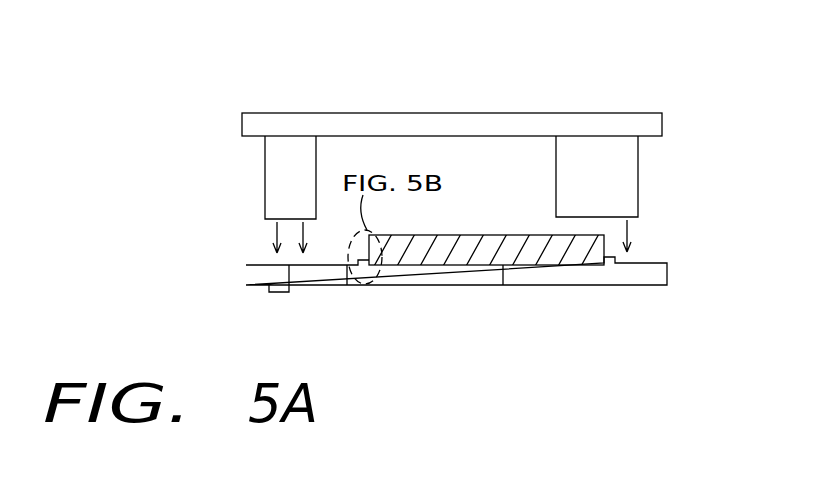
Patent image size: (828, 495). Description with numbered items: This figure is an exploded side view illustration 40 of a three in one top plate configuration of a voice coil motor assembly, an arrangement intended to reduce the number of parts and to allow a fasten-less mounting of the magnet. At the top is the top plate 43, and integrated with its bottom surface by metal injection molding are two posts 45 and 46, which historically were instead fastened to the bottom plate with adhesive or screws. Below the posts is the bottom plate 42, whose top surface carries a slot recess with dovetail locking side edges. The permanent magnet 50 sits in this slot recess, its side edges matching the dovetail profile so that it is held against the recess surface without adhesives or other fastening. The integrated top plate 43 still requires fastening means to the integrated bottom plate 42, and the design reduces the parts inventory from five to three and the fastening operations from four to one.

The exploded side view illustration 40 is at (238, 75).
The top plate 43 is at (480, 121).
The post 45 is at (278, 175).
The post 46 is at (632, 178).
The permanent magnet 50 is at (537, 250).
The bottom plate 42 is at (633, 273).